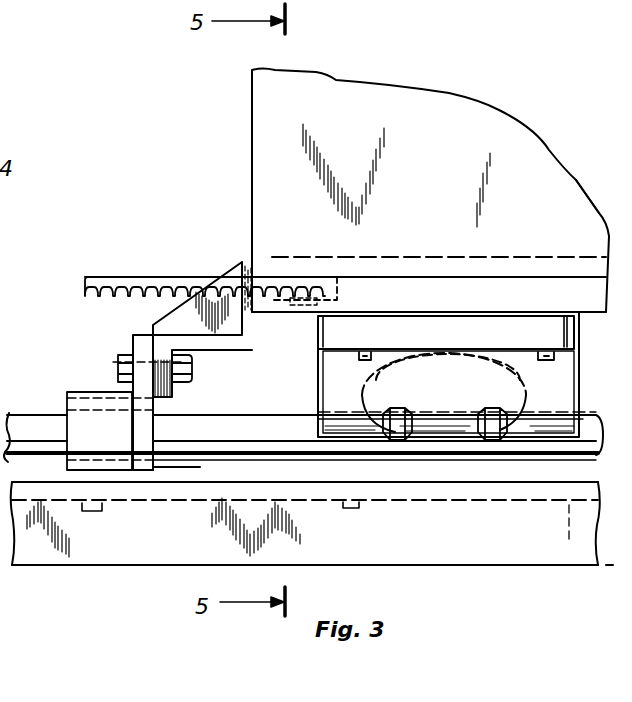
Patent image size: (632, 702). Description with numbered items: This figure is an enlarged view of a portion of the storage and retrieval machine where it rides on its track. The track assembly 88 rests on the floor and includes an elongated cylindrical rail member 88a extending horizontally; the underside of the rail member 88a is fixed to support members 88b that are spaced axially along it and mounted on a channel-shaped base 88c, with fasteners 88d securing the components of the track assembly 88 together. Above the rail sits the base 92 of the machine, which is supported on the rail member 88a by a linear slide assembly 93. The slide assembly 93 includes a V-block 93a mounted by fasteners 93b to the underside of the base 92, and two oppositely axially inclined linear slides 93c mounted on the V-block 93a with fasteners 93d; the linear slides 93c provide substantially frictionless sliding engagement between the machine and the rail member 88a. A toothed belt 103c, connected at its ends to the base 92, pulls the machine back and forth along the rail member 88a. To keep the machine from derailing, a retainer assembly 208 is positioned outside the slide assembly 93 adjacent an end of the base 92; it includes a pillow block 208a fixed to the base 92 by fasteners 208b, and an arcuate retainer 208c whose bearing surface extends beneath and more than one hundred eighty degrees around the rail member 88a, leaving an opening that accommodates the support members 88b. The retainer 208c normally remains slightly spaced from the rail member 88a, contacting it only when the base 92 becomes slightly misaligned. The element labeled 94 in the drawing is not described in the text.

The track assembly 88 is at (463, 560).
The rail member 88a is at (237, 421).
The support members 88b is at (554, 465).
The channel-shaped base 88c is at (386, 553).
The fasteners 88d is at (92, 511).
The base 92 is at (577, 207).
The linear slide assembly 93 is at (579, 374).
The V-block 93a is at (538, 324).
The fasteners 93b is at (359, 355).
The linear slides 93c is at (461, 341).
The fasteners 93d is at (483, 432).
The carriage body 94 is at (262, 150).
The toothed belt 103c is at (130, 284).
The retainer assembly 208 is at (120, 338).
The pillow block 208a is at (157, 467).
The fasteners 208b is at (118, 366).
The retainer 208c is at (65, 410).